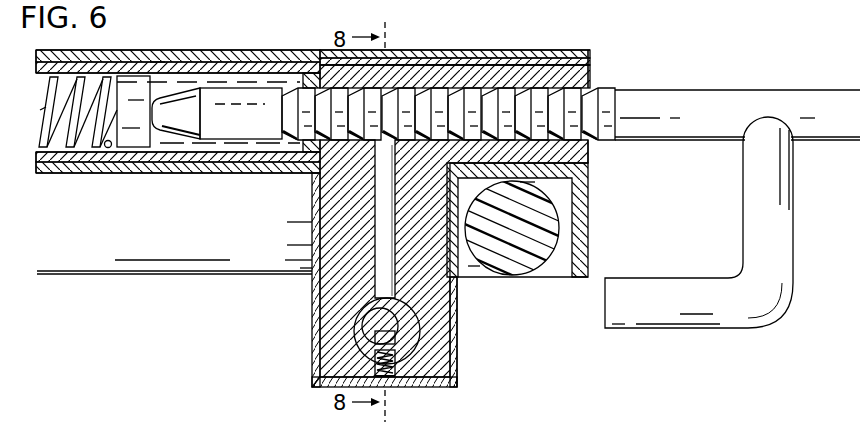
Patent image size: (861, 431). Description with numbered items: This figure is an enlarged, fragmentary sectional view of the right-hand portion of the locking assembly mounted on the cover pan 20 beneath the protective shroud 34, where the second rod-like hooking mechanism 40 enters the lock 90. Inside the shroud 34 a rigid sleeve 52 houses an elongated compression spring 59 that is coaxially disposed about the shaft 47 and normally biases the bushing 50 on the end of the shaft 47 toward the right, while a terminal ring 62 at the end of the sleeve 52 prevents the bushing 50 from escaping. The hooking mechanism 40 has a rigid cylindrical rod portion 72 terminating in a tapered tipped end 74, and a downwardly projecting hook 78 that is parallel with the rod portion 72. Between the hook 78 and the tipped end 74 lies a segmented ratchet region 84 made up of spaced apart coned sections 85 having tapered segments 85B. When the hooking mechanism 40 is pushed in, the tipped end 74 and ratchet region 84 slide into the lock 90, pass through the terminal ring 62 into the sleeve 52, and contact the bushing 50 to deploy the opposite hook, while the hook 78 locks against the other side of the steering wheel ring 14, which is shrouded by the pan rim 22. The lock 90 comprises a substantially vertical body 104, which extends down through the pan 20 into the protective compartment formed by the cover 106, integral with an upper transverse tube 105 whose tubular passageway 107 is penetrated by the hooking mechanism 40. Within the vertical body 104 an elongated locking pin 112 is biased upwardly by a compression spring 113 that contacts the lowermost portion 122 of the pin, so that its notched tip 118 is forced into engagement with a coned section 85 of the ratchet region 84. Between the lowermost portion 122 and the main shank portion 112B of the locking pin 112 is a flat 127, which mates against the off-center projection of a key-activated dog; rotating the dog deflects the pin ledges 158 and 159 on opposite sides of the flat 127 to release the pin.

The pan 20 is at (246, 165).
The shroud 34 is at (215, 34).
The hooking mechanism 40 is at (800, 80).
The shaft 47 is at (87, 125).
The bushing 50 is at (134, 135).
The sleeve 52 is at (157, 62).
The compression spring 59 is at (44, 106).
The terminal ring 62 is at (311, 76).
The rod portion 72 is at (676, 127).
The tipped end 74 is at (172, 118).
The hook 78 is at (648, 312).
The ratchet region 84 is at (608, 77).
The coned sections 85 is at (452, 84).
The tapered segments 85B is at (424, 105).
The lock 90 is at (465, 385).
The body 104 is at (328, 328).
The tube 105 is at (495, 78).
The cover 106 is at (362, 248).
The tubular passageway 107 is at (585, 62).
The locking pin 112 is at (313, 272).
The main shank portion 112B is at (326, 224).
The compression spring 113 is at (395, 372).
The notched tip 118 is at (313, 202).
The lowermost portion 122 is at (395, 340).
The flat 127 is at (393, 333).
The pin ledge 158 is at (394, 310).
The pin ledge 159 is at (316, 378).
The steering wheel ring 14 is at (522, 250).
The rim 22 is at (588, 216).